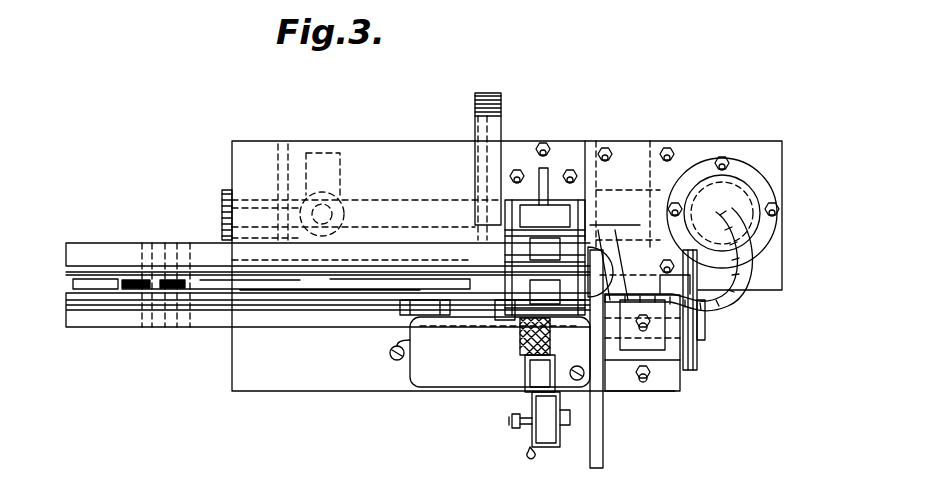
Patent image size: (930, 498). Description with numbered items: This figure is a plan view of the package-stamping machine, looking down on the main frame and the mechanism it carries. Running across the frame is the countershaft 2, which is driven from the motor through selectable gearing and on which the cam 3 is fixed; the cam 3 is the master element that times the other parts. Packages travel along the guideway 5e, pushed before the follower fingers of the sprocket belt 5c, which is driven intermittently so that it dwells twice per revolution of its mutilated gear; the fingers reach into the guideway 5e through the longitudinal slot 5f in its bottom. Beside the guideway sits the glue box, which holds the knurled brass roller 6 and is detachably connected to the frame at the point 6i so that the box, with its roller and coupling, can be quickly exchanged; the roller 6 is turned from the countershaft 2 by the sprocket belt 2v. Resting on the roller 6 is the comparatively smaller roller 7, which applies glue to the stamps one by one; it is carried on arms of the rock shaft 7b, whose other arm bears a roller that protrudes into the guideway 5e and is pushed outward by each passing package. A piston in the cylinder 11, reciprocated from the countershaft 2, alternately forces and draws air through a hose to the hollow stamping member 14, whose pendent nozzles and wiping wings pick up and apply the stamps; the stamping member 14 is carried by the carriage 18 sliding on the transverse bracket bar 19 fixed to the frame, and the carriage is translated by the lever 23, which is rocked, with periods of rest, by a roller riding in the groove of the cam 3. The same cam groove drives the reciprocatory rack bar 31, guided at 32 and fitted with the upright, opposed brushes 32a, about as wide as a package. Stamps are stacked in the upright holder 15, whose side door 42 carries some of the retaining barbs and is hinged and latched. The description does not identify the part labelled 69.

The countershaft 2 is at (368, 205).
The cam 3 is at (485, 125).
The guideway 5e is at (93, 275).
The sprocket belt 5c is at (178, 276).
The longitudinal slot 5f is at (70, 283).
The roller 6 is at (520, 362).
The connection point 6i is at (390, 353).
The roller 7 is at (530, 378).
The rock shaft 7b is at (447, 318).
The cylinder 11 is at (728, 190).
The stamping member 14 is at (600, 235).
The upright holder 15 is at (550, 456).
The carriage 18 is at (735, 298).
The transverse bracket bar 19 is at (605, 447).
The lever 23 is at (705, 345).
The sprocket belt 2v is at (706, 330).
The reciprocatory rack bar 31 is at (543, 205).
The guide 32 is at (524, 215).
The brushes 32a is at (510, 327).
The side door 42 is at (528, 433).
The bolted block 69 is at (690, 375).